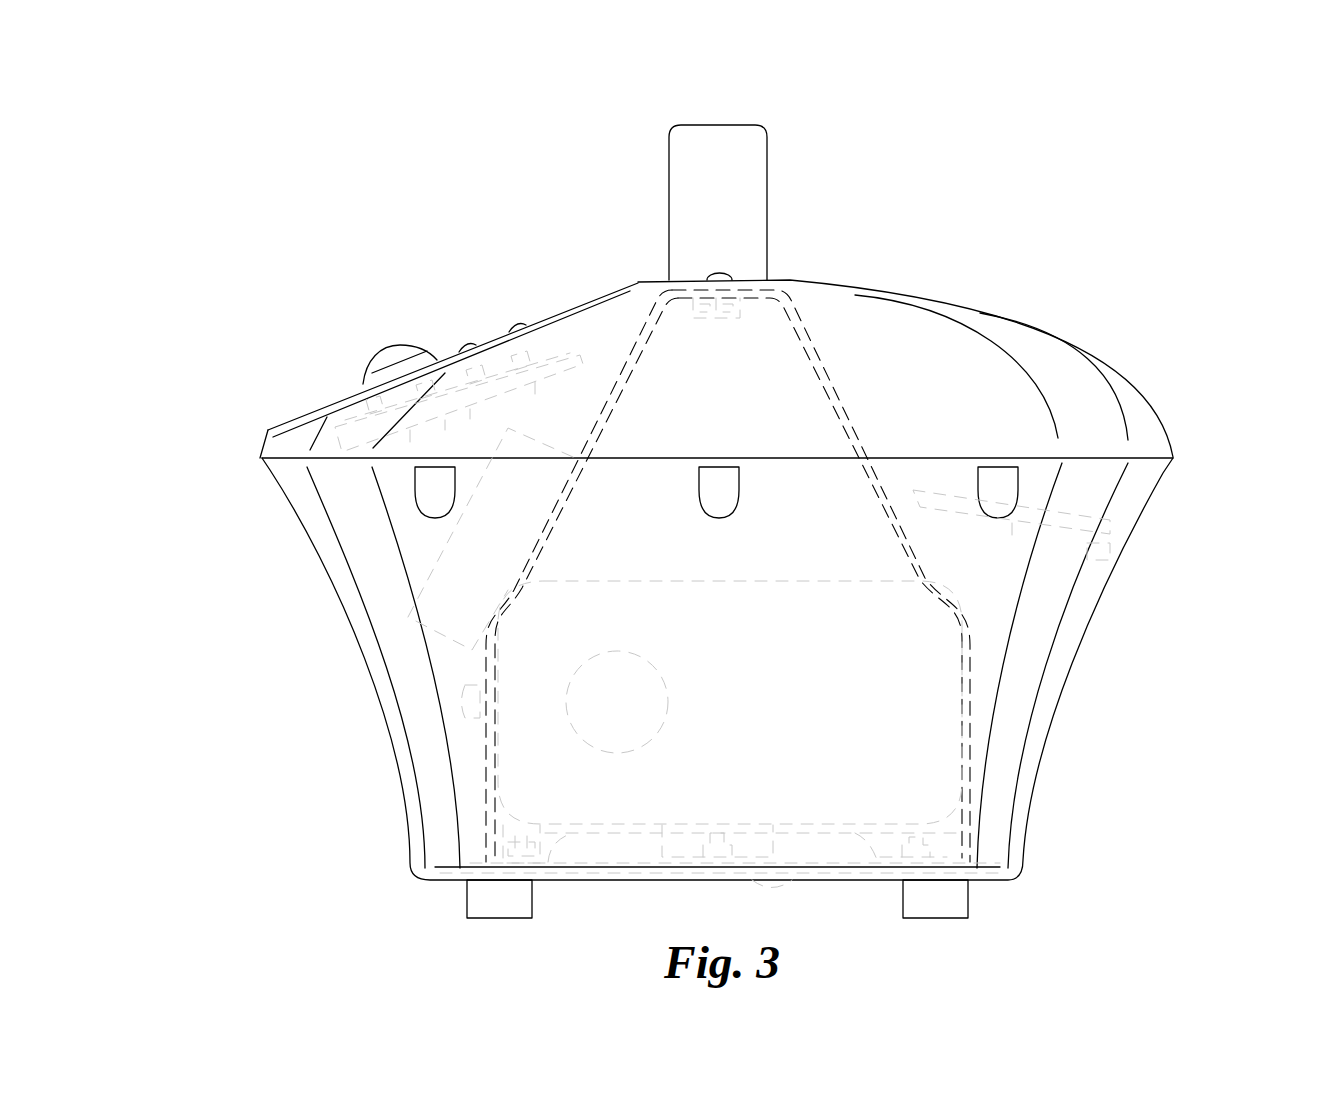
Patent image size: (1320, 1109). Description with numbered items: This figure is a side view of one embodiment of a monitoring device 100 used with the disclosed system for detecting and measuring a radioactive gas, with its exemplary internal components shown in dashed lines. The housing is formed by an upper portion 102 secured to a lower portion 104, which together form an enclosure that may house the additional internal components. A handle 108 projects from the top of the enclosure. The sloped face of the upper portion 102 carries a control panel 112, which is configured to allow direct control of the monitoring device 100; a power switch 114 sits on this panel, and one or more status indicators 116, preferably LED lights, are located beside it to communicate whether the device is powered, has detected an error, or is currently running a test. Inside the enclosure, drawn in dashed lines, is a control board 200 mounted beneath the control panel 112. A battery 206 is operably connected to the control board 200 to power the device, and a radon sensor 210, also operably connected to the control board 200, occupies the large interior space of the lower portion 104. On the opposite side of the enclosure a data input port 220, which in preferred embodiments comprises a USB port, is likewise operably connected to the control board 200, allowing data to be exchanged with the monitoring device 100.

The monitoring device 100 is at (889, 146).
The upper portion 102 is at (1122, 382).
The lower portion 104 is at (1140, 485).
The handle 108 is at (732, 138).
The control panel 112 is at (293, 415).
The power switch 114 is at (390, 348).
The status indicators 116 is at (451, 340).
The control board 200 is at (557, 363).
The battery 206 is at (450, 602).
The radon sensor 210 is at (937, 722).
The data input port 220 is at (1065, 538).